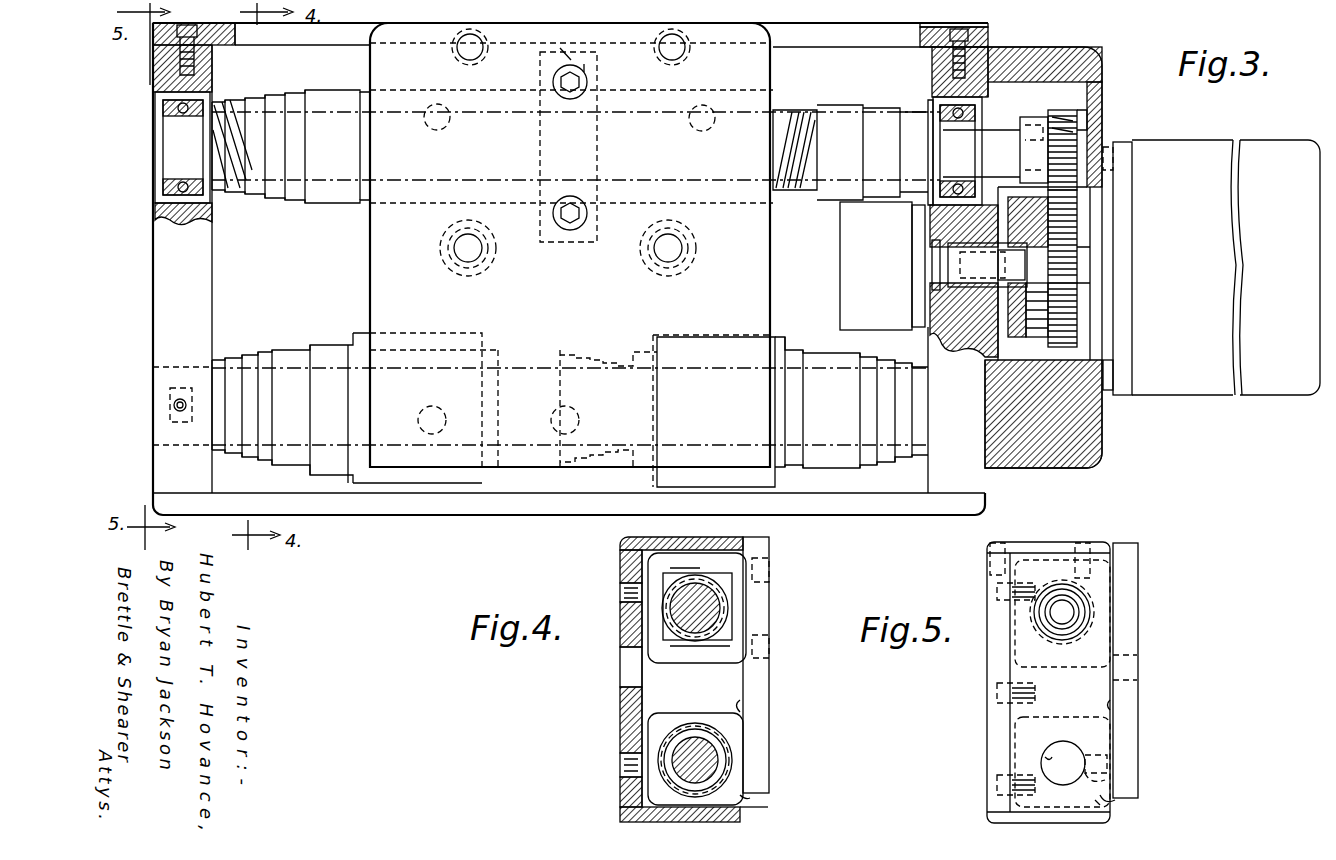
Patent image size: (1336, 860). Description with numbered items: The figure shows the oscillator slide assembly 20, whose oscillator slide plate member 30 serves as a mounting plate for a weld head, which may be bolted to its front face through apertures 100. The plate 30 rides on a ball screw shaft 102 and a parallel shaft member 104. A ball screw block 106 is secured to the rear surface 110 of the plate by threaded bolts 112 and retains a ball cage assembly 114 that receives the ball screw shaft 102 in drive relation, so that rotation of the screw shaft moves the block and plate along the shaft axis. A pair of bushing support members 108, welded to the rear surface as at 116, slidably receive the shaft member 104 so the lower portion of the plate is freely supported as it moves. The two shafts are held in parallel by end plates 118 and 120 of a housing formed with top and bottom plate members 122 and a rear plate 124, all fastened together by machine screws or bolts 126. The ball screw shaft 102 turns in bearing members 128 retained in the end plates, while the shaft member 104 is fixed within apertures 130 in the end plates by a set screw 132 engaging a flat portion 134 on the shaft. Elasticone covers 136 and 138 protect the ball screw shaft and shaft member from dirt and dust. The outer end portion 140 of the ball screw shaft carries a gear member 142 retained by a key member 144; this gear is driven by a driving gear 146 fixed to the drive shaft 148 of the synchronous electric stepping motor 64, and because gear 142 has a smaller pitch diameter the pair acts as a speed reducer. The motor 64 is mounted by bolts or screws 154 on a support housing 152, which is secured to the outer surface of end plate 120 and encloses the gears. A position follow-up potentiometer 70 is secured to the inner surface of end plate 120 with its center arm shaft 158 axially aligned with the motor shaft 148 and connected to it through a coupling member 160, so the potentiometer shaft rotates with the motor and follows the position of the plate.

In FIG. 3, the oscillator slide assembly 20 is at (1172, 458).
In FIG. 3, the oscillator slide plate member 30 is at (430, 483).
In FIG. 4, the oscillator slide plate member 30 is at (755, 748).
In FIG. 5, the oscillator slide plate member 30 is at (1130, 716).
In FIG. 3, the synchronous electric stepping motor 64 is at (1282, 150).
In FIG. 3, the position follow-up potentiometer 70 is at (840, 282).
In FIG. 3, the apertures 100 is at (458, 52).
In FIG. 4, the apertures 100 is at (770, 655).
In FIG. 5, the apertures 100 is at (1140, 668).
In FIG. 3, the ball screw shaft 102 is at (800, 108).
In FIG. 4, the ball screw shaft 102 is at (720, 608).
In FIG. 5, the ball screw shaft 102 is at (1072, 612).
In FIG. 3, the shaft member 104 is at (828, 460).
In FIG. 4, the shaft member 104 is at (672, 748).
In FIG. 5, the shaft member 104 is at (1067, 758).
In FIG. 3, the ball screw block 106 is at (586, 67).
In FIG. 4, the ball screw block 106 is at (658, 657).
In FIG. 5, the ball screw block 106 is at (1062, 683).
In FIG. 3, the bushing support members 108 is at (470, 485).
In FIG. 4, the bushing support members 108 is at (740, 800).
In FIG. 5, the bushing support members 108 is at (1105, 823).
In FIG. 4, the rear surface 110 is at (743, 710).
In FIG. 5, the rear surface 110 is at (1115, 702).
In FIG. 3, the threaded bolts 112 is at (588, 80).
In FIG. 4, the threaded bolts 112 is at (770, 572).
In FIG. 3, the ball cage assembly 114 is at (540, 142).
In FIG. 4, the ball cage assembly 114 is at (655, 632).
In FIG. 4, the welding 116 is at (752, 797).
In FIG. 5, the welding 116 is at (1118, 800).
In FIG. 3, the end plate 118 is at (153, 308).
In FIG. 5, the end plate 118 is at (1025, 705).
In FIG. 3, the end plate 120 is at (975, 489).
In FIG. 3, the top and bottom plate members 122 is at (337, 27).
In FIG. 4, the top and bottom plate members 122 is at (625, 545).
In FIG. 5, the top and bottom plate members 122 is at (1092, 537).
In FIG. 4, the rear plate 124 is at (622, 698).
In FIG. 5, the rear plate 124 is at (995, 740).
In FIG. 3, the machine screws or bolts 126 is at (186, 28).
In FIG. 5, the machine screws or bolts 126 is at (1000, 592).
In FIG. 3, the bearing members 128 is at (156, 203).
In FIG. 3, the apertures 130 is at (160, 440).
In FIG. 5, the apertures 130 is at (1043, 757).
In FIG. 3, the set screw 132 is at (172, 406).
In FIG. 5, the set screw 132 is at (1110, 762).
In FIG. 3, the flat portion 134 is at (170, 390).
In FIG. 5, the flat portion 134 is at (1110, 780).
In FIG. 3, the elasticone cover 136 is at (333, 90).
In FIG. 3, the elasticone cover 138 is at (312, 467).
In FIG. 3, the outer end portion 140 is at (1080, 140).
In FIG. 3, the gear member 142 is at (1088, 110).
In FIG. 3, the key member 144 is at (1082, 118).
In FIG. 3, the driving gear 146 is at (1075, 295).
In FIG. 3, the drive shaft 148 is at (1092, 268).
In FIG. 3, the support housing 152 is at (1090, 452).
In FIG. 3, the bolts or screws 154 is at (1128, 375).
In FIG. 3, the center arm shaft 158 is at (948, 258).
In FIG. 3, the coupling member 160 is at (1030, 337).